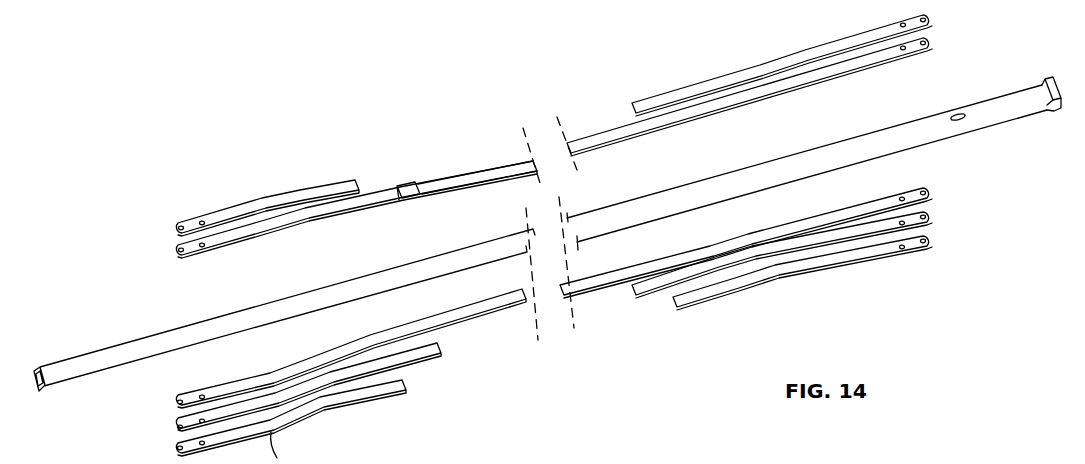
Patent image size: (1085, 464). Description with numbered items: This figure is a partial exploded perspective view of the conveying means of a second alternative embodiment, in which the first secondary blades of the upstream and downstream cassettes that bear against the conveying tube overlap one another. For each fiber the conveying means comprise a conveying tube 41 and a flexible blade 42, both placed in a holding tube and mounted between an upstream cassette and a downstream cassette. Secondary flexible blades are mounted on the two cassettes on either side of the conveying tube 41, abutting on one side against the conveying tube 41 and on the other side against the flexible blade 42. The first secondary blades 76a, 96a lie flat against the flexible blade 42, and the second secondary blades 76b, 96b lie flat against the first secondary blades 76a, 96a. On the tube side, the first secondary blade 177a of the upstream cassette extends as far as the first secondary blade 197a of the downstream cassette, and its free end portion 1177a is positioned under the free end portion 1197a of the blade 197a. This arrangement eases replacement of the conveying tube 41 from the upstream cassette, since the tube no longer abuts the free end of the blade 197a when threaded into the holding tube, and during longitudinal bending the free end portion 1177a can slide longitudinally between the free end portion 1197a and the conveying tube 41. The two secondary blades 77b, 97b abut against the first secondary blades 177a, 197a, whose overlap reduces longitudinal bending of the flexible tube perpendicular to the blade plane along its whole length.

The conveying tube 41 is at (77, 361).
The flexible blade 42 is at (190, 390).
The second secondary blade 97b is at (323, 190).
The first secondary blade 197a is at (243, 238).
The free end portion 1197a is at (403, 188).
The free end portion 1177a is at (400, 205).
The first secondary blade 177a is at (588, 140).
The second secondary blade 77b is at (661, 99).
The first secondary blade 76a is at (634, 299).
The second secondary blade 76b is at (697, 308).
The first secondary blade 96a is at (440, 355).
The second secondary blade 96b is at (390, 393).